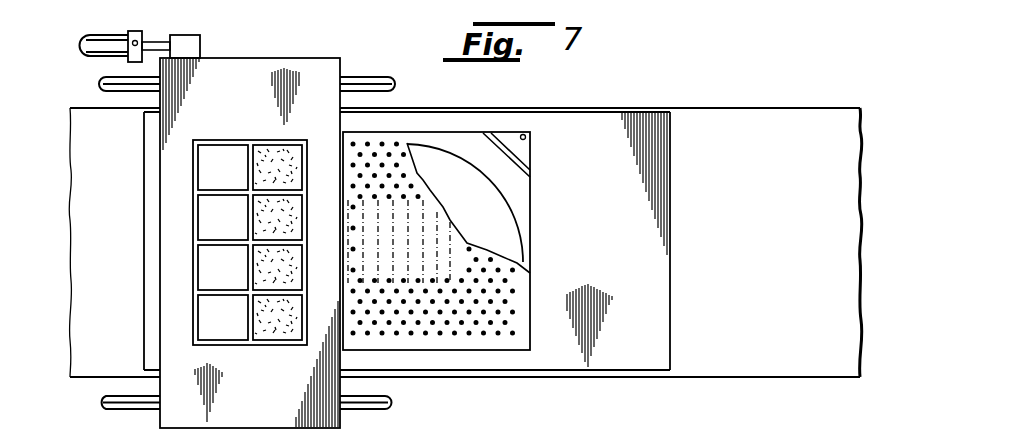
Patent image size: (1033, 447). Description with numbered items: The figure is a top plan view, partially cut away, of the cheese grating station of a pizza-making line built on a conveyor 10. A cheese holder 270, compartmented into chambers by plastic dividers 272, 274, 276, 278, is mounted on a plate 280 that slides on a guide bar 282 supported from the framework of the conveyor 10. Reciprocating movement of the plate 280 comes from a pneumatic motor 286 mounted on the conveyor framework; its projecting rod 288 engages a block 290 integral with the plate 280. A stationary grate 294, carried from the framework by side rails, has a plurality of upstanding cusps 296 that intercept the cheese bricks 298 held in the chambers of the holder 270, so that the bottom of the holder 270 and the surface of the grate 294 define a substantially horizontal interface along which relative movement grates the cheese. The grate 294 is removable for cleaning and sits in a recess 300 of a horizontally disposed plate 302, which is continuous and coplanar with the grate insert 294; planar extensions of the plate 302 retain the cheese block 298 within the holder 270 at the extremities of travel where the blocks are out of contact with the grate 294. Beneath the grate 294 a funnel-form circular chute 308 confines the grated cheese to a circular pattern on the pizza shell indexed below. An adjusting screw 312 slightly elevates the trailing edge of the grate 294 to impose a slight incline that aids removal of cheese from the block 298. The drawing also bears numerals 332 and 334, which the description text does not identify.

The conveyor 10 is at (818, 378).
The cheese holder 270 is at (226, 140).
The divider 272 is at (247, 315).
The divider 274 is at (221, 290).
The divider 276 is at (221, 240).
The divider 278 is at (221, 190).
The plate 280 is at (290, 65).
The guide bar 282 is at (121, 409).
The pneumatic motor 286 is at (93, 35).
The projecting rod 288 is at (157, 42).
The block 290 is at (200, 40).
The stationary grate 294 is at (385, 142).
The cusps 296 is at (482, 313).
The cheese brick 298 is at (290, 148).
The recess 300 is at (473, 132).
The horizontally disposed plate 302 is at (570, 109).
The funnel-form circular chute 308 is at (514, 180).
The adjusting screw 312 is at (531, 138).
The element 332 is at (566, 442).
The element 334 is at (700, 446).